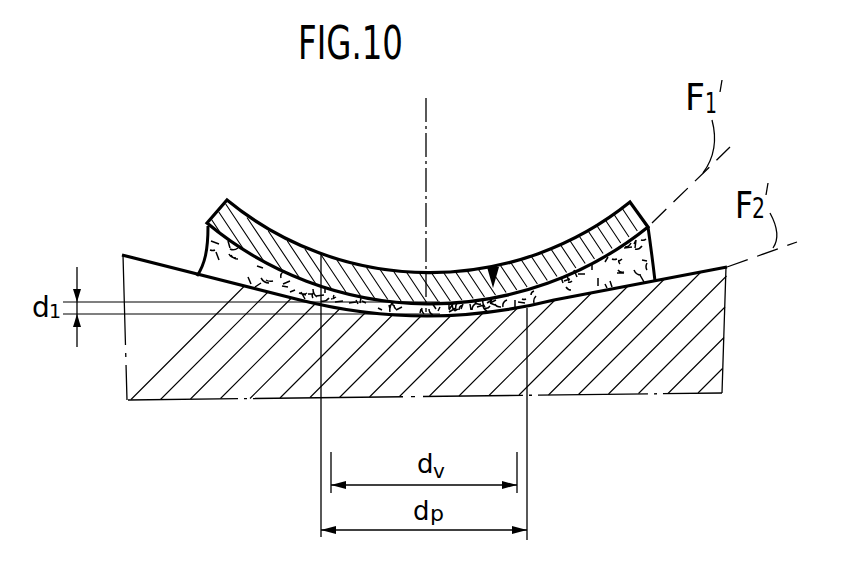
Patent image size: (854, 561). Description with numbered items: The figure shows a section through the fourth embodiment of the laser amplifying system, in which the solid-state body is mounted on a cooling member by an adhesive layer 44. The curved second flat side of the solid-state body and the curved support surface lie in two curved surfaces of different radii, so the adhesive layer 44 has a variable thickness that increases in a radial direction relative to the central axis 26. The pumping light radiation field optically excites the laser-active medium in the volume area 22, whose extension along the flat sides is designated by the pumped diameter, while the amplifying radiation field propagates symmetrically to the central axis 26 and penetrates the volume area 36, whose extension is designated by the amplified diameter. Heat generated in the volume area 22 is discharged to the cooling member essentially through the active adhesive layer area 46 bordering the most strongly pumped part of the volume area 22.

The volume area 22 is at (365, 276).
The central axis 26 is at (426, 130).
The volume area 36 is at (493, 267).
The adhesive layer 44 is at (225, 277).
The active adhesive layer area 46 is at (445, 312).